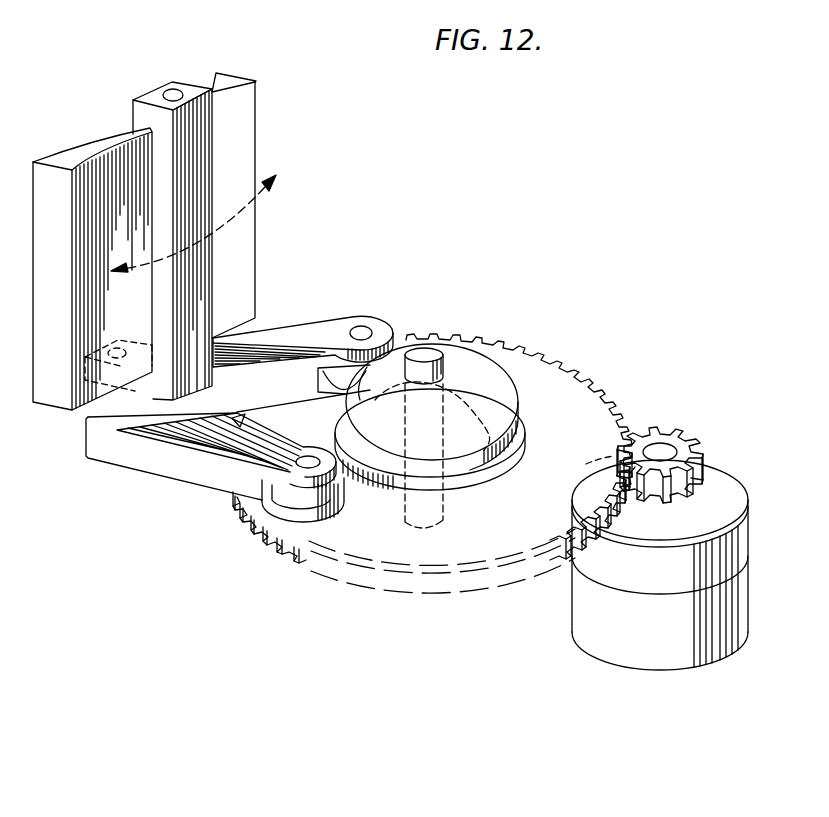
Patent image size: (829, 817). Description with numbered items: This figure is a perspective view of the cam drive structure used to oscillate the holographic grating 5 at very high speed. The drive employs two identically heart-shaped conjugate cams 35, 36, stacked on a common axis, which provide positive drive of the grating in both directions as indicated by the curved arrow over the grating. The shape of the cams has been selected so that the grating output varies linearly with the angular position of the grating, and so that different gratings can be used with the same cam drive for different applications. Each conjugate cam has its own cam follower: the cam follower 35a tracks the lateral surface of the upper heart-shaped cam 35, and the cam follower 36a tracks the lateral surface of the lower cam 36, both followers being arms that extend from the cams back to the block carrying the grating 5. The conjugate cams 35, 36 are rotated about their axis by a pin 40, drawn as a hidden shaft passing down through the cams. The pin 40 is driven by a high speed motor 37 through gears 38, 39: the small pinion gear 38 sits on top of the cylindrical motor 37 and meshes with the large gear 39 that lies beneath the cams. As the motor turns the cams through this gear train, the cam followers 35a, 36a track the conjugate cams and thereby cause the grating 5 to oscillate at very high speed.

The grating 5 is at (247, 125).
The cam follower 35a is at (310, 337).
The conjugate cam 35 is at (477, 375).
The cam follower 36a is at (192, 477).
The conjugate cam 36 is at (370, 490).
The high speed motor 37 is at (603, 625).
The gear 38 is at (640, 427).
The gear 39 is at (568, 407).
The pin 40 is at (445, 513).